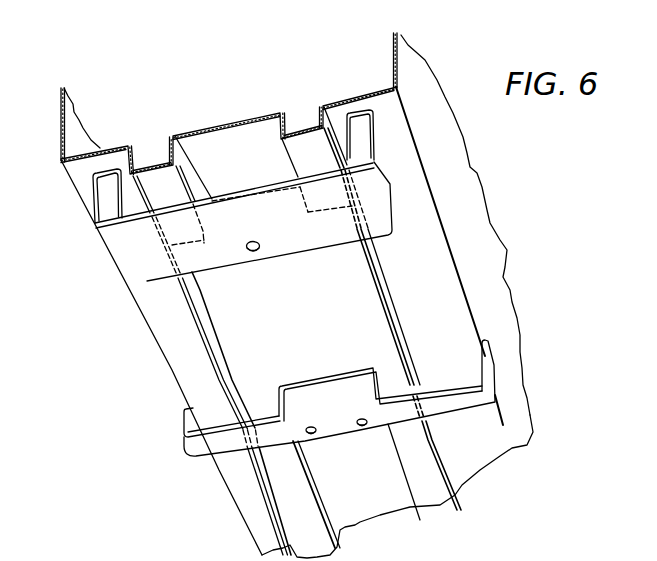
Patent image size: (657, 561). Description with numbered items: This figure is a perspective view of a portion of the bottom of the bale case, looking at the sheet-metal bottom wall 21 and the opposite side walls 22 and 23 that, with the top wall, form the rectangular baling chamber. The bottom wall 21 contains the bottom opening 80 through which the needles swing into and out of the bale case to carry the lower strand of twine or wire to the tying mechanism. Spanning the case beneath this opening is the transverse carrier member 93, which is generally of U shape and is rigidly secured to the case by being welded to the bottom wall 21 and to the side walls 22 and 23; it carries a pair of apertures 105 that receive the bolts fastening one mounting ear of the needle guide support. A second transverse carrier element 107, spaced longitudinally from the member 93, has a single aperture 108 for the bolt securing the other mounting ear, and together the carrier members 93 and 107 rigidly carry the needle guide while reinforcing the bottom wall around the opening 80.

The bottom wall 21 is at (297, 321).
The side wall 22 is at (59, 125).
The side wall 23 is at (462, 229).
The bottom opening 80 is at (216, 358).
The transverse carrier member 93 is at (490, 400).
The apertures 105 is at (339, 451).
The second transverse carrier element 107 is at (147, 283).
The aperture 108 is at (256, 252).